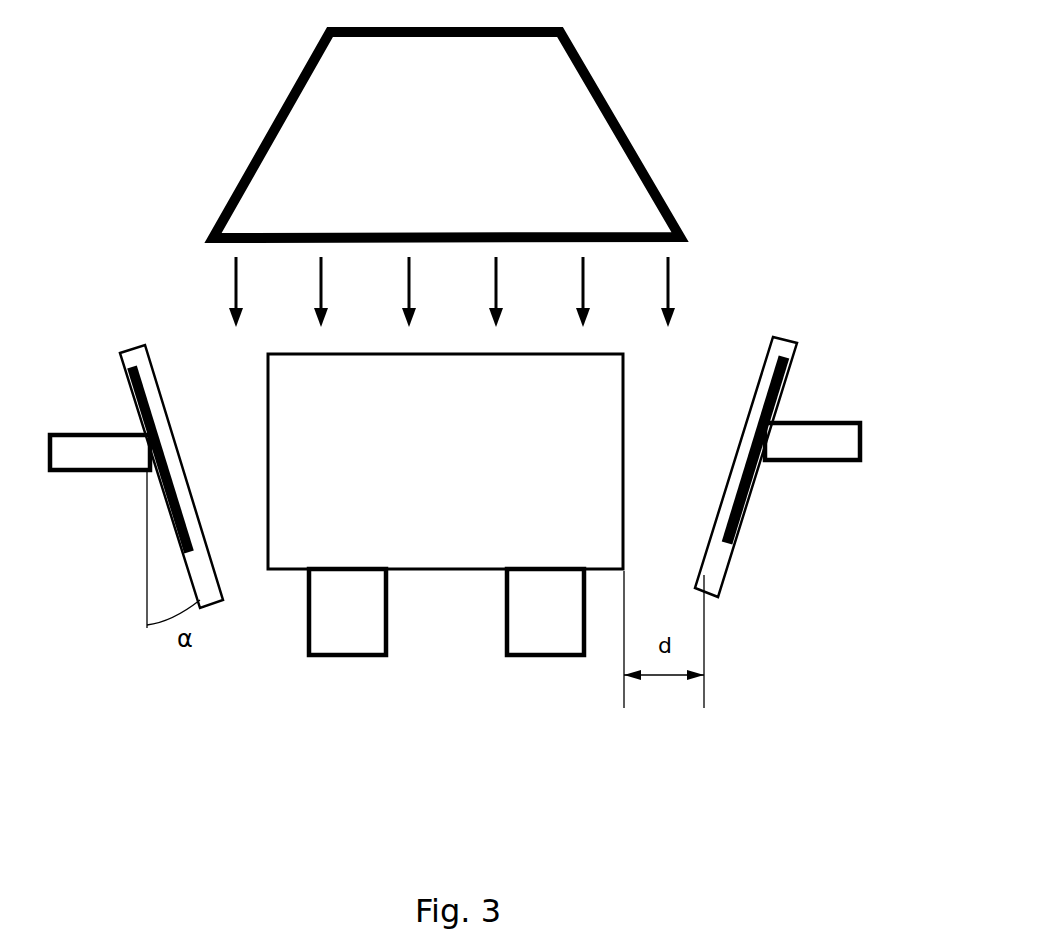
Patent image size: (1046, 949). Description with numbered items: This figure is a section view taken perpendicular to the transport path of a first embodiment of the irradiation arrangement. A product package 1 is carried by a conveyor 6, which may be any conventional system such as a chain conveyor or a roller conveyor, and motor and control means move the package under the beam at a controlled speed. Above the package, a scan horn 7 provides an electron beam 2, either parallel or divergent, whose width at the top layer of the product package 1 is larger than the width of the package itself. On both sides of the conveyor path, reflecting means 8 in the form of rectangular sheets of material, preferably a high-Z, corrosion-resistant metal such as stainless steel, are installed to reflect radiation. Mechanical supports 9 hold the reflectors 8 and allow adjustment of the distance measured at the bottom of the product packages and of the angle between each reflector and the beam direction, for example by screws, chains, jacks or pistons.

The product package 1 is at (612, 420).
The electron beam 2 is at (687, 285).
The conveyor 6 is at (358, 630).
The scan horn 7 is at (567, 115).
The reflecting means 8 is at (775, 362).
The mechanical supports 9 is at (103, 462).